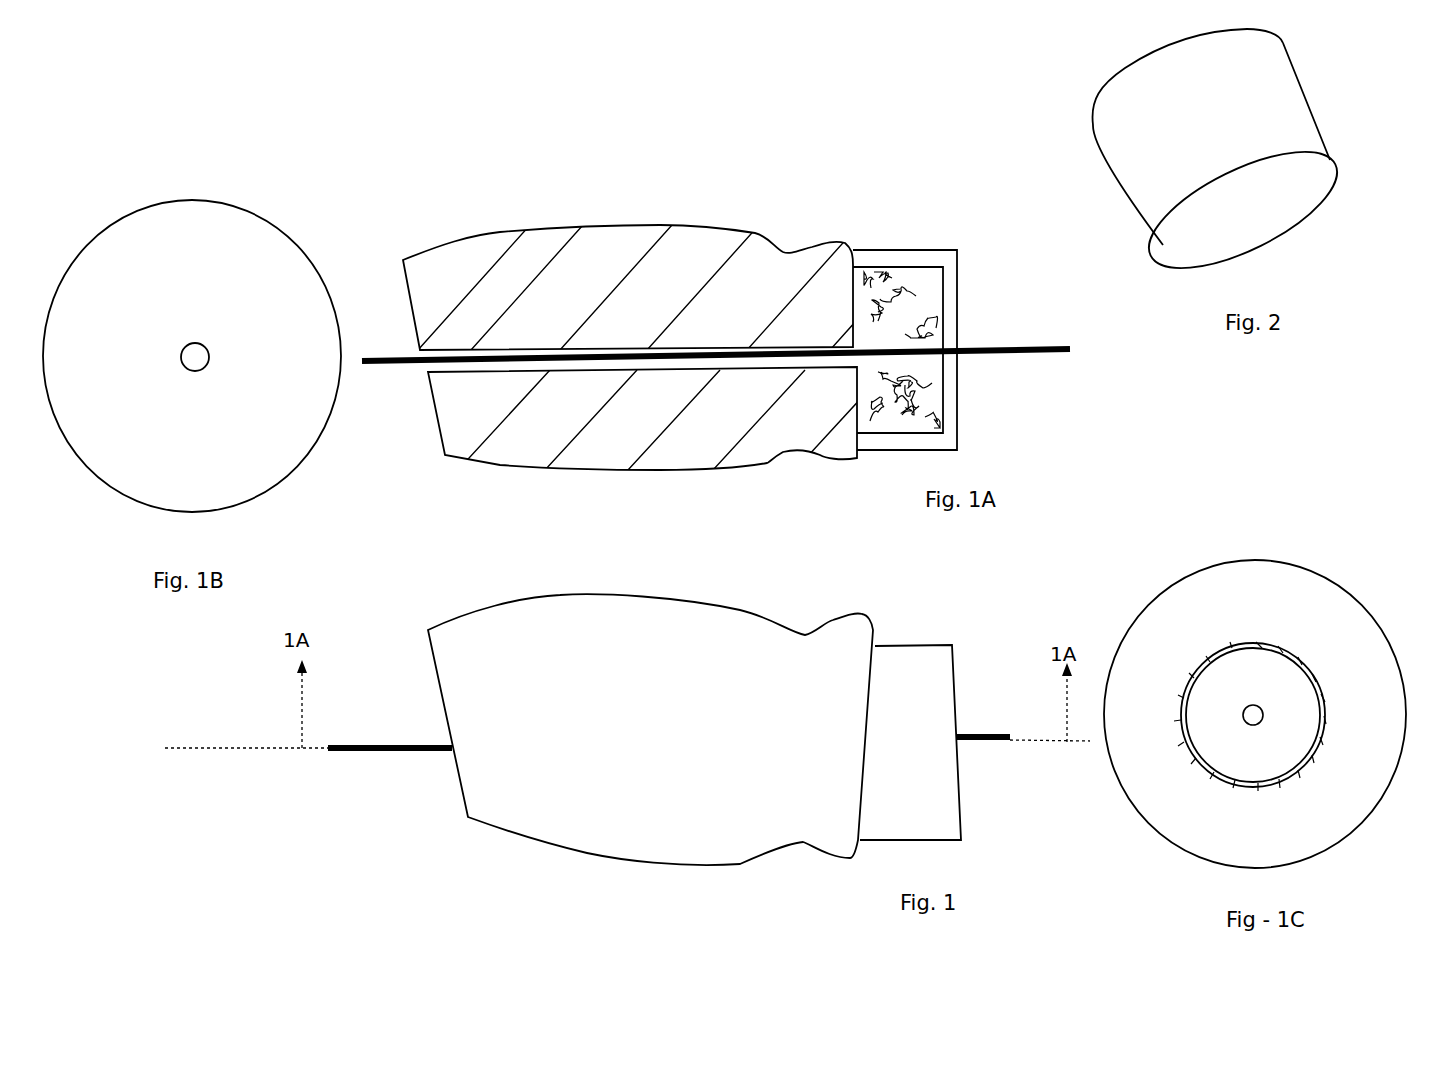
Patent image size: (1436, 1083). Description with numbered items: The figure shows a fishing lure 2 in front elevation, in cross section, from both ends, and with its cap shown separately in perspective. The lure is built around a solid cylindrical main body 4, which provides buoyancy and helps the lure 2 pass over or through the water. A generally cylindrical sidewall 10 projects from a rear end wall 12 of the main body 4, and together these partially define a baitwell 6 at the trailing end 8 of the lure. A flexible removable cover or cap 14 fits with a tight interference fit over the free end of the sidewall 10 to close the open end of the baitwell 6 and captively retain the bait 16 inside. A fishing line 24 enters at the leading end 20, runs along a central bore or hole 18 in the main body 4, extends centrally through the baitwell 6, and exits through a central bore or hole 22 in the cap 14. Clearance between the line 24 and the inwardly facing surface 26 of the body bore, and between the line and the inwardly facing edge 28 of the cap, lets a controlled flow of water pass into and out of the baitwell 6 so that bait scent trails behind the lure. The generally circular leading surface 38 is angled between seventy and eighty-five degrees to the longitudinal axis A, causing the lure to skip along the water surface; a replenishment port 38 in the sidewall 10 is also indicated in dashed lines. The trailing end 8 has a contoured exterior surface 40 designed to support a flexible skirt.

In FIG. 1A, the fishing lure 2 is at (808, 187).
In FIG. 1, the fishing lure 2 is at (937, 608).
In FIG. 1B, the fishing lure 2 is at (265, 202).
In FIG. 1C, the fishing lure 2 is at (1363, 530).
In FIG. 1A, the main body 4 is at (502, 245).
In FIG. 1, the main body 4 is at (650, 722).
In FIG. 1B, the main body 4 is at (218, 216).
In FIG. 1C, the main body 4 is at (1320, 570).
In FIG. 1, the baitwell 6 is at (965, 703).
In FIG. 1, the trailing end 8 is at (961, 802).
In FIG. 1A, the cylindrical sidewall 10 is at (947, 428).
In FIG. 1, the cylindrical sidewall 10 is at (937, 645).
In FIG. 1C, the cylindrical sidewall 10 is at (1213, 773).
In FIG. 1A, the rear end wall 12 is at (853, 287).
In FIG. 1, the rear end wall 12 is at (873, 638).
In FIG. 1A, the removable cover or cap 14 is at (953, 263).
In FIG. 2, the removable cover or cap 14 is at (1180, 248).
In FIG. 1A, the bait 16 is at (910, 300).
In FIG. 1A, the central bore or hole 18 is at (577, 366).
In FIG. 1B, the central bore or hole 18 is at (196, 345).
In FIG. 1A, the leading end 20 is at (430, 431).
In FIG. 1, the leading end 20 is at (430, 697).
In FIG. 1A, the central bore or hole 22 is at (960, 363).
In FIG. 2, the central bore or hole 22 is at (1260, 215).
In FIG. 1A, the fishing line 24 is at (383, 357).
In FIG. 1, the fishing line 24 is at (407, 750).
In FIG. 1A, the inwardly facing surface 26 is at (640, 348).
In FIG. 1B, the inwardly facing surface 26 is at (181, 360).
In FIG. 2, the inwardly facing edge 28 is at (1267, 210).
In FIG. 1A, the leading surface 38 is at (432, 396).
In FIG. 1, the leading surface 38 is at (460, 783).
In FIG. 1B, the leading surface 38 is at (250, 453).
In FIG. 1C, the leading surface 38 is at (1252, 643).
In FIG. 1A, the contoured exterior surface 40 is at (820, 452).
In FIG. 1, the contoured exterior surface 40 is at (837, 620).
In FIG. 1, the longitudinal axis A is at (240, 750).